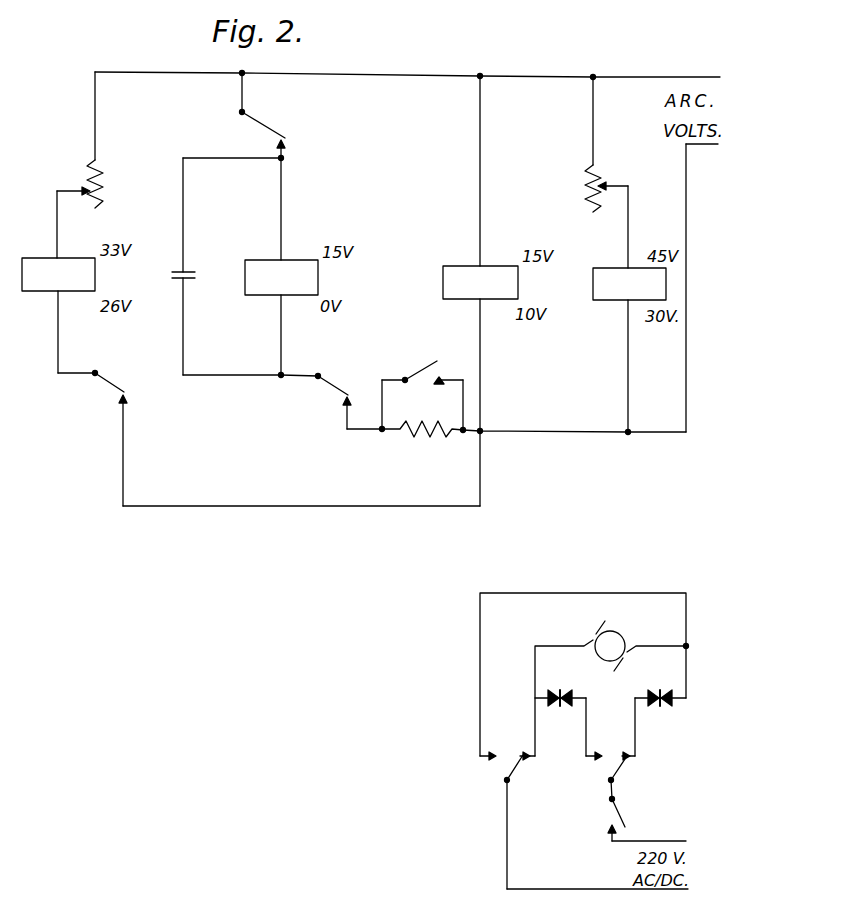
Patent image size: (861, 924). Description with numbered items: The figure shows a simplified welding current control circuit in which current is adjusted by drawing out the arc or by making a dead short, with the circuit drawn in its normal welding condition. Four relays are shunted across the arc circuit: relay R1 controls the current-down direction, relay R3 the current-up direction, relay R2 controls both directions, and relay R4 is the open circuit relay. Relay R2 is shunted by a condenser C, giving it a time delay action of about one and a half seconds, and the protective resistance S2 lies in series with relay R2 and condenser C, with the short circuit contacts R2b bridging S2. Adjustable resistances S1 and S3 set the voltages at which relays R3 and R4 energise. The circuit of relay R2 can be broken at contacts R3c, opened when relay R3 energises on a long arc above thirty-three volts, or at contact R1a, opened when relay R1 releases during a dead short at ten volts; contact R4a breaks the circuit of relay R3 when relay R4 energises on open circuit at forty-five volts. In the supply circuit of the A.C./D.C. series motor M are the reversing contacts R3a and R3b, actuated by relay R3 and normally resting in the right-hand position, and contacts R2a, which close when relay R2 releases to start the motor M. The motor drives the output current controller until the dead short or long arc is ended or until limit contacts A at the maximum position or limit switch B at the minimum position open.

The relay R1 is at (480, 291).
The time delay relay R2 is at (281, 266).
The relay R3 is at (58, 274).
The open circuit relay R4 is at (629, 350).
The adjustable resistance S1 is at (92, 184).
The protective resistance S2 is at (422, 443).
The adjustable resistance S3 is at (591, 144).
The condenser C is at (186, 266).
The contacts of relay R3 R3c is at (267, 115).
The contact of relay R4 R4a is at (102, 439).
The contact of relay R1 R1a is at (324, 402).
The short circuit contacts of relay R2 R2b is at (422, 386).
The reversing switch contacts R3a is at (490, 822).
The reversing switch contacts R3b is at (634, 777).
The contacts of relay R2 R2a is at (634, 819).
The limit contacts A is at (560, 687).
The limit switch B is at (660, 688).
The motor M is at (610, 646).